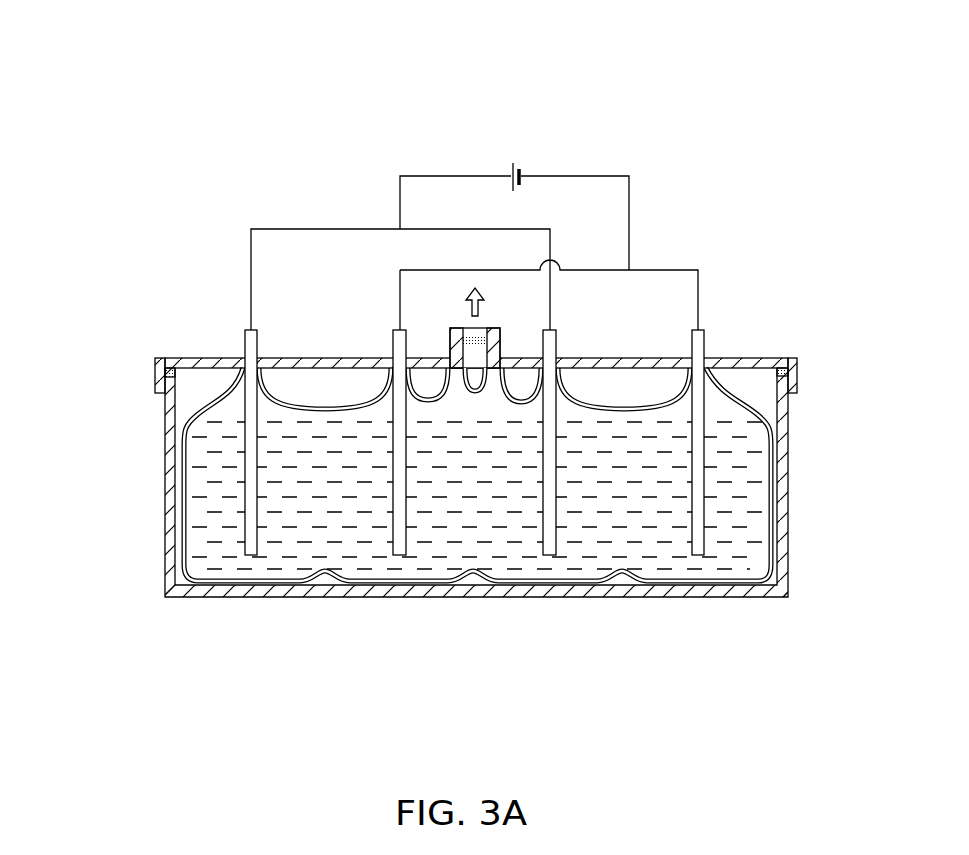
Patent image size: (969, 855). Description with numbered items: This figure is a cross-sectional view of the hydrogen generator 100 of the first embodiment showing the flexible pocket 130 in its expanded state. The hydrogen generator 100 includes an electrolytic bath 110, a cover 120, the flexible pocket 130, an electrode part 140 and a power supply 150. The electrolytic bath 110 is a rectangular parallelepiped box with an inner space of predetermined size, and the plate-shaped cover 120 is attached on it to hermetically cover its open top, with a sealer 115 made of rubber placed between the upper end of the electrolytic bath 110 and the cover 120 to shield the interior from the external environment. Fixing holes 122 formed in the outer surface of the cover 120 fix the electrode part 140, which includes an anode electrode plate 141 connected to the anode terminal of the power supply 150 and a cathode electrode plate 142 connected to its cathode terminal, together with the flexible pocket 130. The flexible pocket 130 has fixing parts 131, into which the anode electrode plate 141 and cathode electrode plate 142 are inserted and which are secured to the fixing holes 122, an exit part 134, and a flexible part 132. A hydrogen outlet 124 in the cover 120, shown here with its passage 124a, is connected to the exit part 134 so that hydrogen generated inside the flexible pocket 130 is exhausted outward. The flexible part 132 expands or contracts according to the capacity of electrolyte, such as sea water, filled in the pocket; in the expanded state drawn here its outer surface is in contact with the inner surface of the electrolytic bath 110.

The hydrogen generator 100 is at (728, 100).
The electrolytic bath 110 is at (783, 519).
The sealer 115 is at (793, 378).
The cover 120 is at (787, 359).
The fixing holes 122 is at (393, 357).
The hydrogen outlet 124 is at (498, 333).
The outlet channel 124a is at (468, 330).
The flexible pocket 130 is at (98, 438).
The fixing parts 131 is at (227, 394).
The flexible part 132 is at (178, 503).
The exit part 134 is at (478, 388).
The electrode part 140 is at (555, 668).
The anode electrode plate 141 is at (458, 598).
The cathode electrode plate 142 is at (253, 545).
The power supply 150 is at (526, 143).